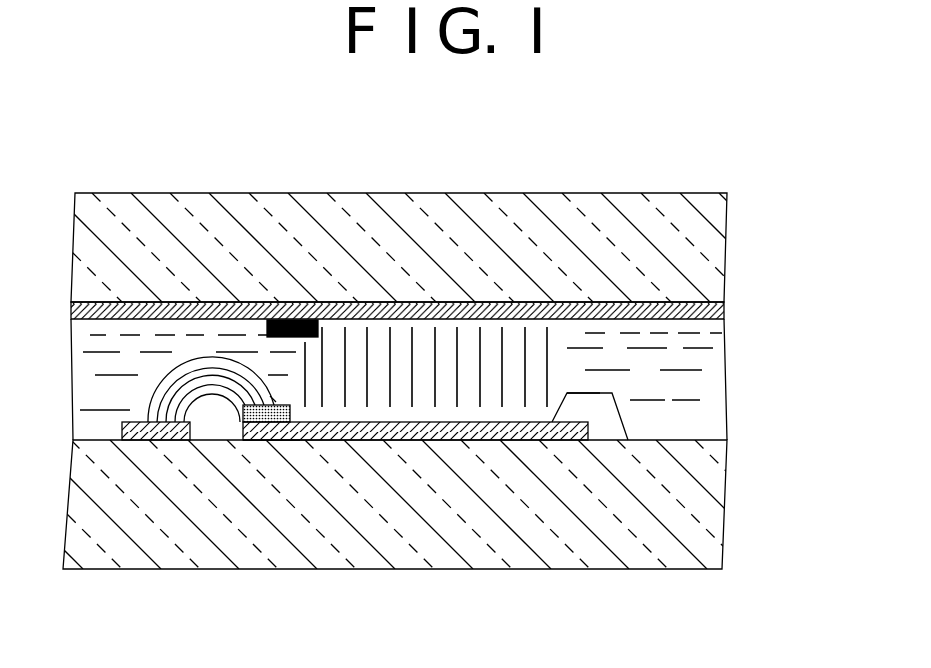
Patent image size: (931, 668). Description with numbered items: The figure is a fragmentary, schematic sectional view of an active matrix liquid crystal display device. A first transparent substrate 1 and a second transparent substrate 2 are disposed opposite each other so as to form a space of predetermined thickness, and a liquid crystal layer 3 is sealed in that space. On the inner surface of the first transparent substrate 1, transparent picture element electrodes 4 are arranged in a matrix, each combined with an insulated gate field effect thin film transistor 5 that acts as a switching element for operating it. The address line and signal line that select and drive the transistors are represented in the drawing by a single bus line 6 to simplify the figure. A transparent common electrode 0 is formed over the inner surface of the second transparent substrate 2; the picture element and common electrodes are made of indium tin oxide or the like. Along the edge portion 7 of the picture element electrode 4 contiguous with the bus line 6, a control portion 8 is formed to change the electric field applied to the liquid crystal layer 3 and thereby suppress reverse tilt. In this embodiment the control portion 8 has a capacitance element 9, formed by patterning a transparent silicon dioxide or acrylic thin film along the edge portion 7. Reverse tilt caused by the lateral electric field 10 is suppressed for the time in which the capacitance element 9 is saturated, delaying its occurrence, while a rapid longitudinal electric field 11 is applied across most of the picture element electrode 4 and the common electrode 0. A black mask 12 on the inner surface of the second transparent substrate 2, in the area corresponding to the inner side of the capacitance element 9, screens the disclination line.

The transparent common electrode 0 is at (718, 307).
The first transparent substrate 1 is at (700, 503).
The second transparent substrate 2 is at (695, 241).
The liquid crystal layer 3 is at (692, 387).
The picture element electrode 4 is at (452, 456).
The thin film transistor 5 is at (610, 430).
The bus line 6 is at (150, 440).
The edge portion 7 is at (287, 440).
The control portion 8 is at (279, 386).
The capacitance element 9 is at (255, 422).
The lateral electric field 10 is at (187, 360).
The longitudinal electric field 11 is at (527, 348).
The black mask 12 is at (285, 320).